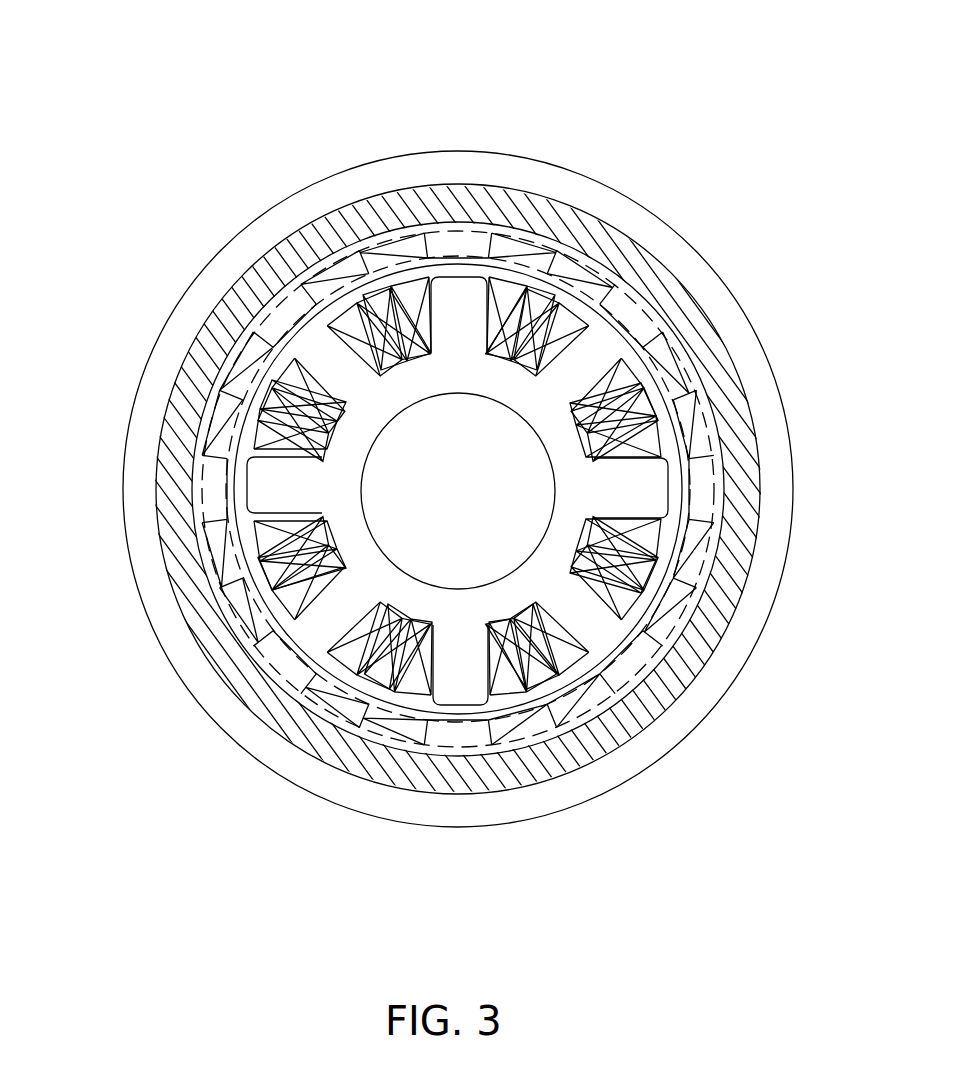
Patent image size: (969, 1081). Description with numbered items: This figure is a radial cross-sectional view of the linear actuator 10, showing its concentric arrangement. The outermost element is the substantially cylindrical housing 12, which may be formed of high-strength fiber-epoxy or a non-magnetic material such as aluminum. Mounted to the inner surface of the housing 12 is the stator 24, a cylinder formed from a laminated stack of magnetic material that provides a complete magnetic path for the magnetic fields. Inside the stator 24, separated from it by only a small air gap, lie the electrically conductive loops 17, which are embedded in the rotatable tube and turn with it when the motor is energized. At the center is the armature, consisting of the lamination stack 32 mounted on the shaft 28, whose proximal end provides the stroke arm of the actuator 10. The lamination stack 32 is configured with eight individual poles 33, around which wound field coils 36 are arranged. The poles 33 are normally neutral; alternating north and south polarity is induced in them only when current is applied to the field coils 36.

The linear actuator 10 is at (535, 80).
The housing 12 is at (667, 222).
The stator 24 is at (250, 285).
The electrically conductive loops 17 is at (210, 420).
The lamination stack 32 is at (457, 558).
The poles 33 is at (315, 620).
The field coils 36 is at (560, 650).
The shaft 28 is at (378, 543).